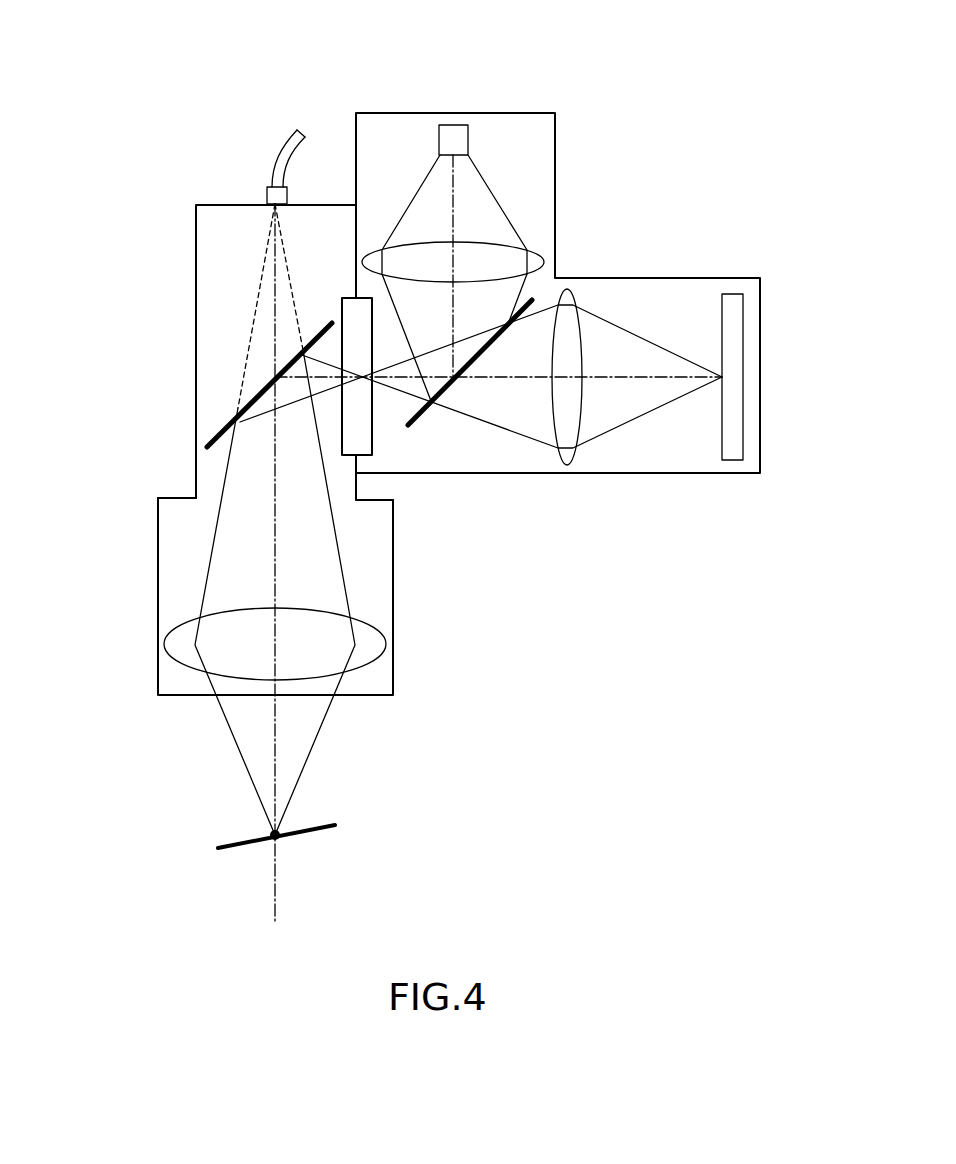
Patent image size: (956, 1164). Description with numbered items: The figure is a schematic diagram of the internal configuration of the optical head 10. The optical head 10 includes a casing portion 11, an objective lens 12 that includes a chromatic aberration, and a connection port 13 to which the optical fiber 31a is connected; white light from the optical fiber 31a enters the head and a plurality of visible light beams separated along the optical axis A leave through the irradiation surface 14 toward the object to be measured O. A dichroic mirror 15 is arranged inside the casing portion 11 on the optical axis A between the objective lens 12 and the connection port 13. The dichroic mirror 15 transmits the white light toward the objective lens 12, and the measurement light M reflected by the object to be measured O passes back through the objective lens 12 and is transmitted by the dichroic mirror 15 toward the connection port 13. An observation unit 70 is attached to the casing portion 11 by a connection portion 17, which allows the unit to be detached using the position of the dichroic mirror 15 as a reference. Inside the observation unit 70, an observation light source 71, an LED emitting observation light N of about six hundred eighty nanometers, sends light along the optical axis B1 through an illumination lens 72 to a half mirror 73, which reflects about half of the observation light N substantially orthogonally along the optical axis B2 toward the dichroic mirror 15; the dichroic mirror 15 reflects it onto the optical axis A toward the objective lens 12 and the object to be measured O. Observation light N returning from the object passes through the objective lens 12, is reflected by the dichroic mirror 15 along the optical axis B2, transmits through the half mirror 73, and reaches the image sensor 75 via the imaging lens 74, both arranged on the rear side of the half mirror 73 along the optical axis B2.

The optical head 10 is at (347, 85).
The casing portion 11 is at (195, 310).
The objective lens 12 is at (387, 633).
The connection port 13 is at (267, 193).
The irradiation surface 14 is at (363, 697).
The dichroic mirror 15 is at (230, 415).
The connection portion 17 is at (376, 453).
The optical fiber 31a is at (285, 147).
The observation unit 70 is at (526, 97).
The observation light source 71 is at (452, 125).
The illumination lens 72 is at (540, 250).
The half mirror 73 is at (423, 413).
The imaging lens 74 is at (567, 464).
The image sensor 75 is at (732, 293).
The optical axis of the observation light source B1 is at (455, 175).
The optical axis of reflected observation light B2 is at (387, 378).
The measurement light M is at (207, 577).
The observation light N is at (345, 568).
The object to be measured O is at (335, 825).
The optical axis A is at (278, 900).